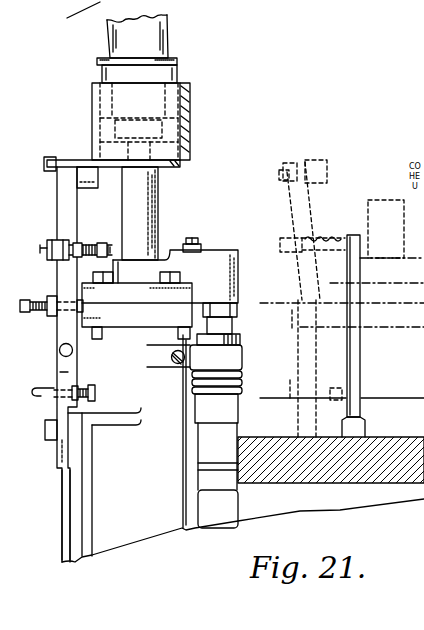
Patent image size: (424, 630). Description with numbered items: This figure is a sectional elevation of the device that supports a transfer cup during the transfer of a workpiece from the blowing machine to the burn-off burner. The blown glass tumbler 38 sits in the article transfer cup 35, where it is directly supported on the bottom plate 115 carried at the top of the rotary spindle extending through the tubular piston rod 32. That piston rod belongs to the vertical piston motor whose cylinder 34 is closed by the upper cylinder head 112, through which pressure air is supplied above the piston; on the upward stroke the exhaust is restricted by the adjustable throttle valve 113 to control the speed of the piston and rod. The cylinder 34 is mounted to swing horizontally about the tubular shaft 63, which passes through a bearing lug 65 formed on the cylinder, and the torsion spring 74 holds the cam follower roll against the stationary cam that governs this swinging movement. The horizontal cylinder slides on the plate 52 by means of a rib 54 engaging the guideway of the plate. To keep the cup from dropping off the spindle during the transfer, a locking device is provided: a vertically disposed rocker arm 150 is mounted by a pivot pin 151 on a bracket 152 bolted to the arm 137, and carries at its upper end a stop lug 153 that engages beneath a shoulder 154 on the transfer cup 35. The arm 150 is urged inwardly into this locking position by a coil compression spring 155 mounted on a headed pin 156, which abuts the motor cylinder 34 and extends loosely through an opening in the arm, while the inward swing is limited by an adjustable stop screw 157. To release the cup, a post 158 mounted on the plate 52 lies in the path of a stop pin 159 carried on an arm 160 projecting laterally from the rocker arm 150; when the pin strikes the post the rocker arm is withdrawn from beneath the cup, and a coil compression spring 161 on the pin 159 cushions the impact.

The blown glass tumbler 38 is at (158, 33).
The article transfer cup 35 is at (110, 100).
The bottom plate 115 is at (180, 128).
The shoulder 154 is at (180, 164).
The stop lug 153 is at (82, 165).
The piston rod 32 is at (150, 203).
The rocker arm 150 is at (58, 213).
The arm 137 is at (63, 488).
The upper cylinder head 112 is at (222, 275).
The adjustable throttle valve 113 is at (192, 238).
The cylinder 34 is at (146, 397).
The tubular shaft 63 is at (220, 327).
The bearing lug 65 is at (233, 358).
The torsion spring 74 is at (275, 381).
The rib 54 is at (226, 443).
The plate 52 is at (270, 443).
The post 158 is at (357, 348).
The arm 160 is at (61, 243).
The coil compression spring 161 is at (94, 241).
The stop pin 159 is at (47, 250).
The adjustable stop screw 157 is at (43, 284).
The pivot pin 151 is at (62, 345).
The bracket 152 is at (62, 372).
The headed pin 156 is at (43, 414).
The coil compression spring 155 is at (80, 397).